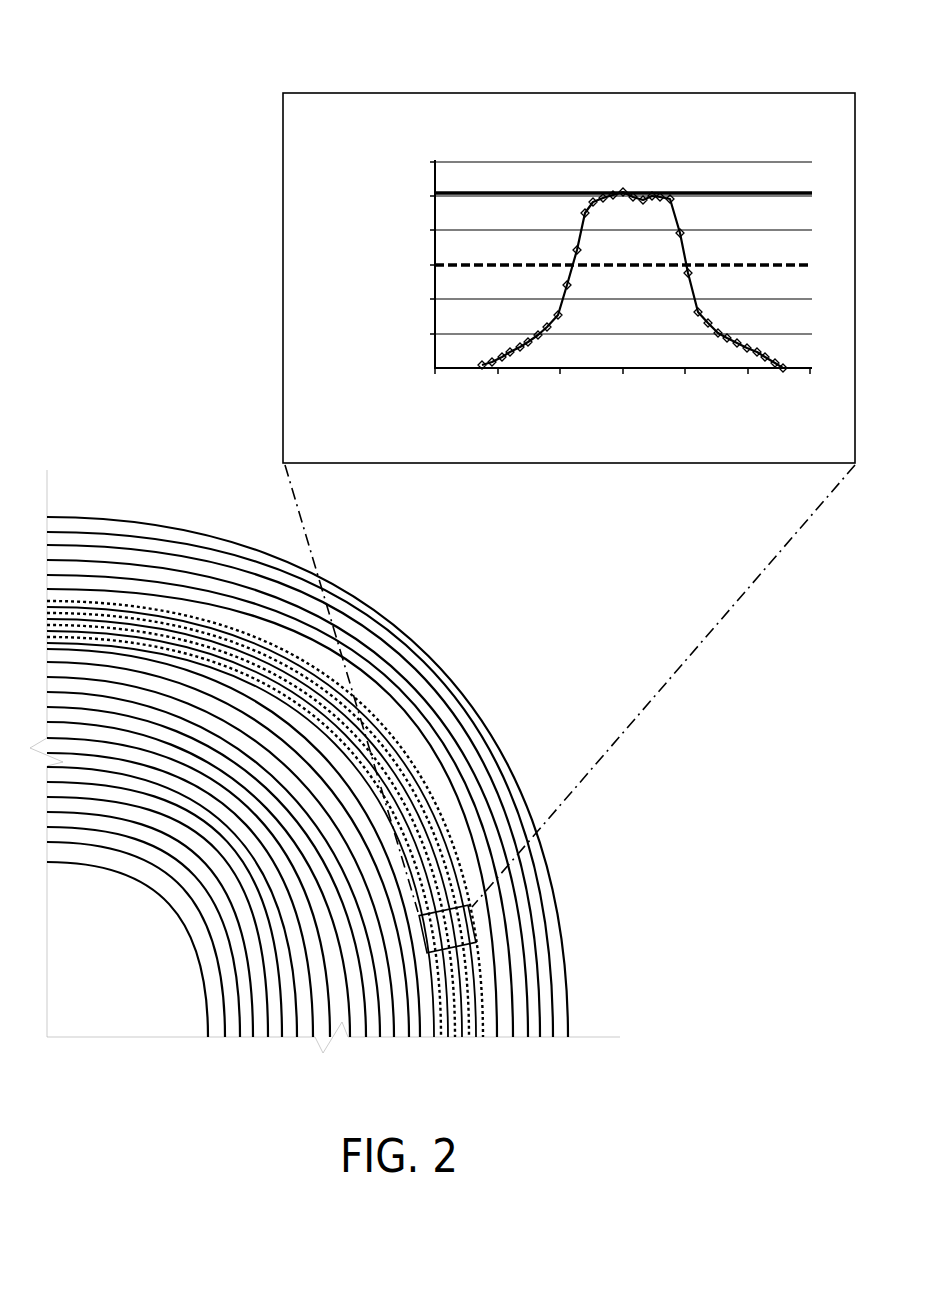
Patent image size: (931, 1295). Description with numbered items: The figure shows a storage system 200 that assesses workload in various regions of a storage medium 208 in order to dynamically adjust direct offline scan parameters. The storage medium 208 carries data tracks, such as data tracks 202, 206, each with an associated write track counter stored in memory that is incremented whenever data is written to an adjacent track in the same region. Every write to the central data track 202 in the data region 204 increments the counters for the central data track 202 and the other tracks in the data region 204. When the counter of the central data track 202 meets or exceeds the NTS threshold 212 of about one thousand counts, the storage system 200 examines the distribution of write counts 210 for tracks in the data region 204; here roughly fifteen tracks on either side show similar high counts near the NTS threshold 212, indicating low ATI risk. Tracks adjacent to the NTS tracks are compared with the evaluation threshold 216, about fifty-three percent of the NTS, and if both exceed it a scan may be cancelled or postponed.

The storage system 200 is at (138, 88).
The central data track 202 is at (470, 912).
The data region 204 is at (492, 925).
The data track 206 is at (417, 722).
The storage medium 208 is at (530, 757).
The distribution of write counts 210 is at (497, 278).
The NTS threshold 212 is at (757, 191).
The evaluation threshold 216 is at (742, 264).